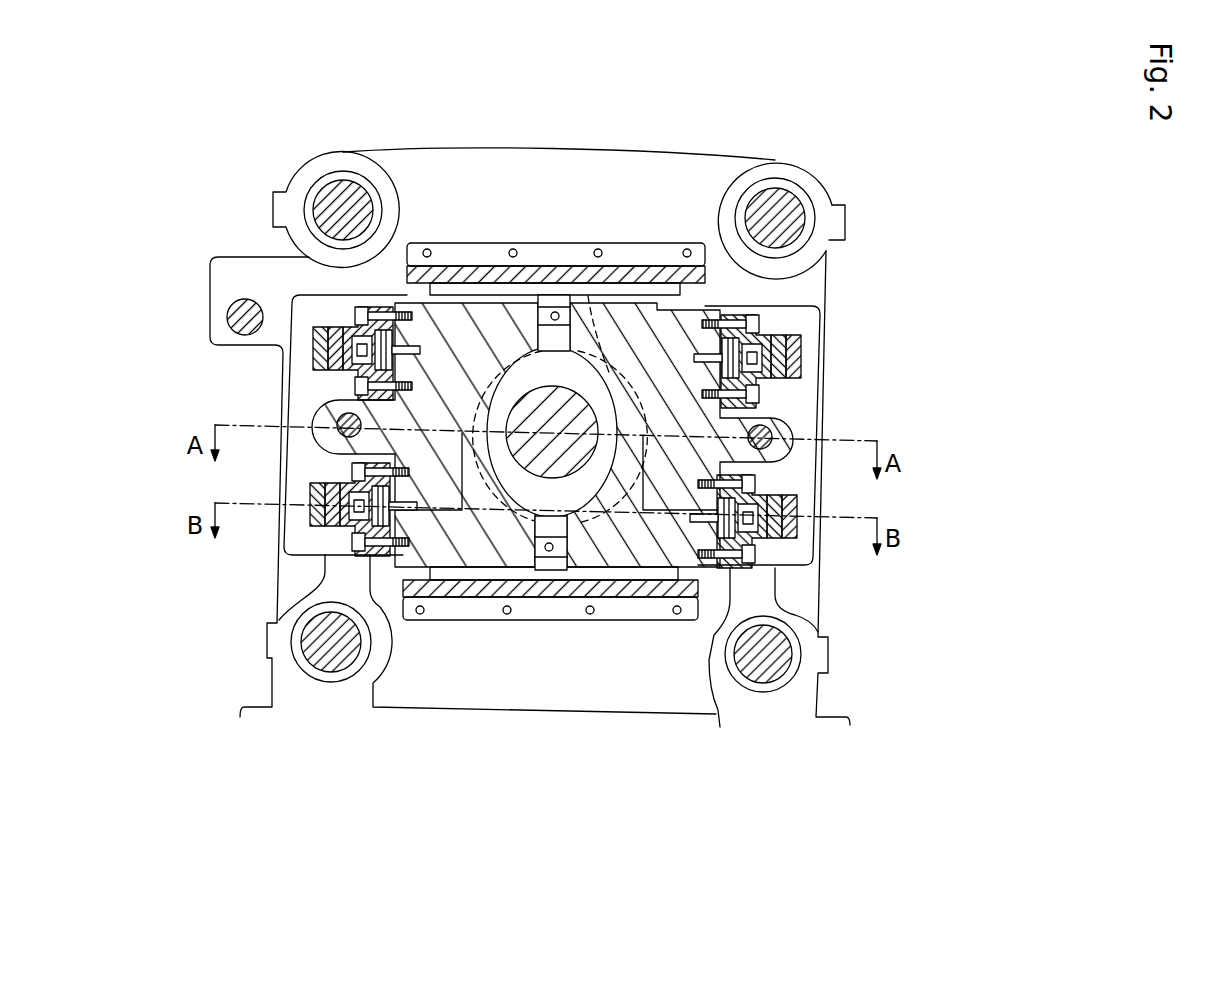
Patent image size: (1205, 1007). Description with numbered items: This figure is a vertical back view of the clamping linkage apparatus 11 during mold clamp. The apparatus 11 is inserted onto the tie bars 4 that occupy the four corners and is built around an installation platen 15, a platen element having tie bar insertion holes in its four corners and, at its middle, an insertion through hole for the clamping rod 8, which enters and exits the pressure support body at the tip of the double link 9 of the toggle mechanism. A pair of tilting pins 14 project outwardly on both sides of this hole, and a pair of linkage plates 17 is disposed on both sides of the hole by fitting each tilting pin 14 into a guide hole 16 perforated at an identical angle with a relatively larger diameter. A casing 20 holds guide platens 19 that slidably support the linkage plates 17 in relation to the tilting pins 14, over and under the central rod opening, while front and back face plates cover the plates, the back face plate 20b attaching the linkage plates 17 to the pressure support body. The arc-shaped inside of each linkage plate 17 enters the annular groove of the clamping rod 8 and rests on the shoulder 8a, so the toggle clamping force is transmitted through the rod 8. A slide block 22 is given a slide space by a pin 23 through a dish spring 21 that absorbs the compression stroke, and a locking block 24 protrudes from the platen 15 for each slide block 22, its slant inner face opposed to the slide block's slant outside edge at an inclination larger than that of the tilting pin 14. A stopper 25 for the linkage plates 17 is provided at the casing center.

The tie bar 4 is at (785, 212).
The clamping rod 8 is at (565, 398).
The shoulder 8a is at (513, 365).
The double link 9 is at (238, 312).
The clamping linkage apparatus 11 is at (408, 138).
The tilting pin 14 is at (352, 424).
The installation platen 15 is at (641, 165).
The guide hole 16 is at (440, 470).
The linkage plate 17 is at (485, 522).
The guide platen 19 is at (473, 273).
The casing 20 is at (636, 247).
The back face plate 20b is at (307, 307).
The dish spring 21 is at (750, 356).
The slide block 22 is at (750, 335).
The pin 23 is at (772, 375).
The locking block 24 is at (797, 354).
The stopper 25 is at (560, 318).